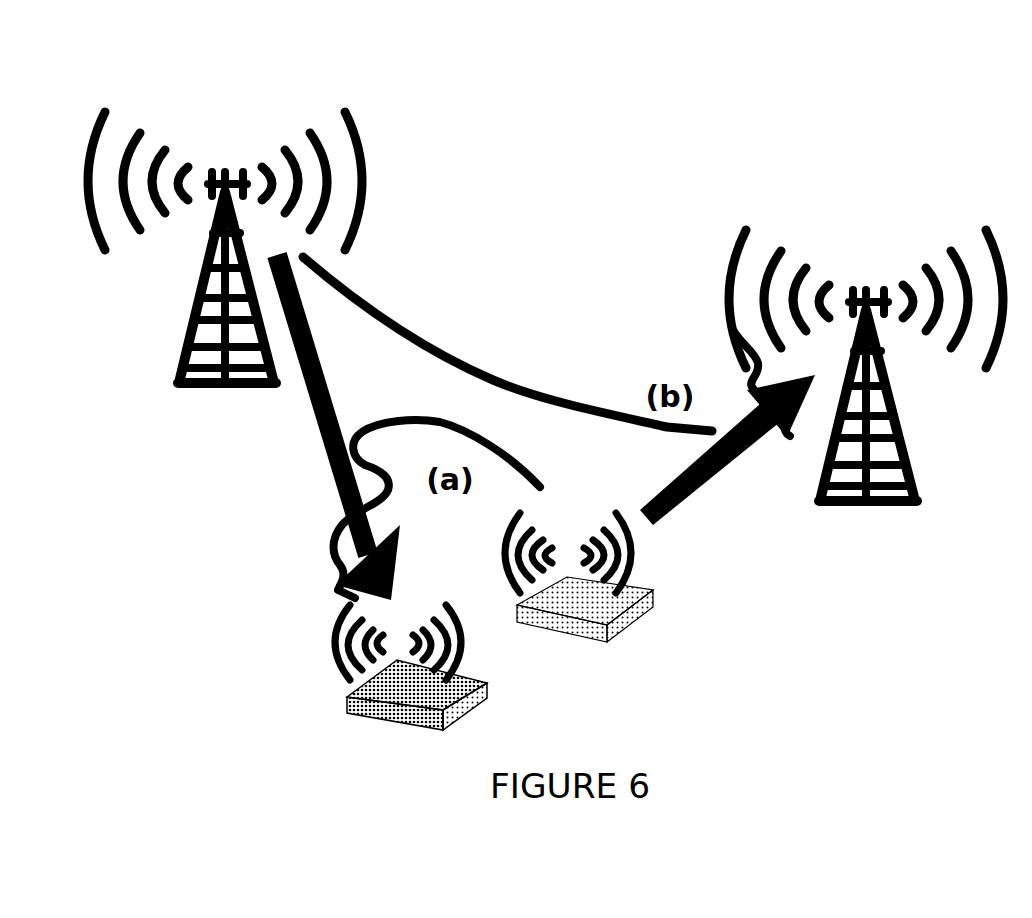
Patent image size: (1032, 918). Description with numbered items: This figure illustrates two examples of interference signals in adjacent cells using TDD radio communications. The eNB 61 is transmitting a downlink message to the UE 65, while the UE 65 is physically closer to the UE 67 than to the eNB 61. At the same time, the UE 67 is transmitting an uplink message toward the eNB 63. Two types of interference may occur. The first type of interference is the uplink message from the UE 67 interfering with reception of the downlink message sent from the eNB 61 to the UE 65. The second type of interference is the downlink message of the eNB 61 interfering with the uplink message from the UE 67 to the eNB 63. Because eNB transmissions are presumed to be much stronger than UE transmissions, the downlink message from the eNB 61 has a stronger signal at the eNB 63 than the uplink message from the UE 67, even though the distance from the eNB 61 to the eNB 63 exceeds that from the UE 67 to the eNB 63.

The eNB 61 is at (210, 333).
The eNB 63 is at (923, 472).
The UE 65 is at (330, 687).
The UE 67 is at (650, 590).